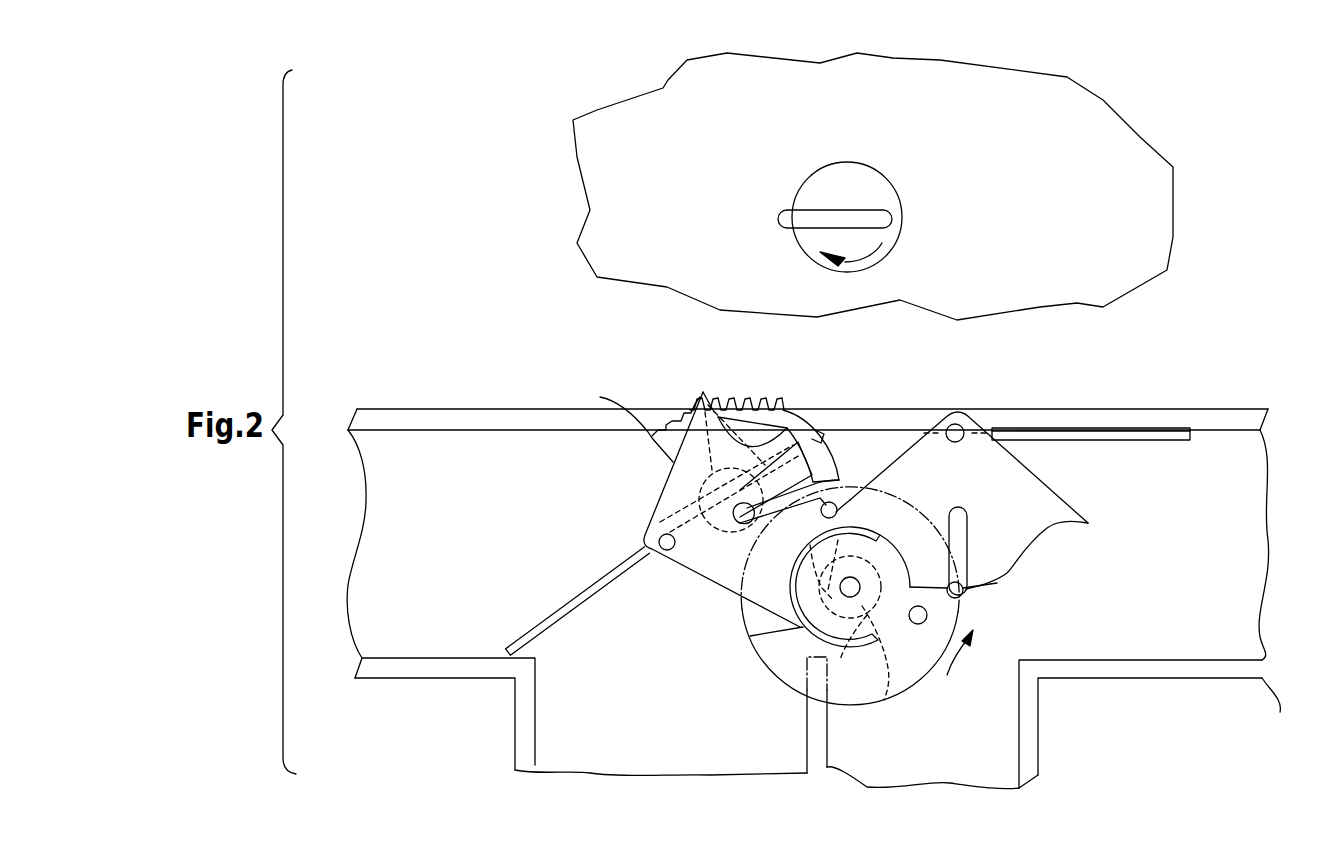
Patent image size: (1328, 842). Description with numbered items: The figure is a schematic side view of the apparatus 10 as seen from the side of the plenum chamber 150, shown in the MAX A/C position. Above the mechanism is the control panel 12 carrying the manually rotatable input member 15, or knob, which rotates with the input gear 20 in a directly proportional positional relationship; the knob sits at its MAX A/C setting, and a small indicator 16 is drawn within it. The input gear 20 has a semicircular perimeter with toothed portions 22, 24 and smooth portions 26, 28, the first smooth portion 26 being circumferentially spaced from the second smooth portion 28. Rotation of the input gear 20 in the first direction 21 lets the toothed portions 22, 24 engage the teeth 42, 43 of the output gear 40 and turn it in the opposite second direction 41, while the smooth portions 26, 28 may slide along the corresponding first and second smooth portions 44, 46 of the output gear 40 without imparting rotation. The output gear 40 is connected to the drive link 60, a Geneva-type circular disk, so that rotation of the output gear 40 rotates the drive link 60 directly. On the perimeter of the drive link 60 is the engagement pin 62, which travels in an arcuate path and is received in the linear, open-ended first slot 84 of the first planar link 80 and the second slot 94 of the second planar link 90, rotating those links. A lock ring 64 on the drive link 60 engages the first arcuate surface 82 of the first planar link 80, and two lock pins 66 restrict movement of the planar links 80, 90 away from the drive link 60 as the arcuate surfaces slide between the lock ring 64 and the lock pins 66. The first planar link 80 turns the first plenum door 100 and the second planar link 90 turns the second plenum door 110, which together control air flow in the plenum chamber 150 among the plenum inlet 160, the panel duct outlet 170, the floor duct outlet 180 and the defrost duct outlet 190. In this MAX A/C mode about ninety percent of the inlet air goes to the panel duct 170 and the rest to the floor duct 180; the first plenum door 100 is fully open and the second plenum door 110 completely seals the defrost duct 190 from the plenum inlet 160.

The apparatus 10 is at (1150, 485).
The control panel 12 is at (1188, 222).
The input member 15 is at (813, 230).
The knob rotation arrow 16 is at (862, 273).
The input gear 20 is at (803, 418).
The first direction 21 is at (720, 368).
The toothed portion 22 is at (746, 394).
The toothed portion 24 is at (667, 403).
The first smooth portion 26 is at (830, 450).
The second smooth portion 28 is at (672, 415).
The output gear 40 is at (750, 637).
The second direction 41 is at (960, 675).
The teeth 42 is at (896, 496).
The teeth 43 is at (895, 688).
The first smooth portion 44 is at (834, 615).
The second smooth portion 46 is at (885, 625).
The drive link 60 is at (888, 686).
The engagement pin 62 is at (964, 594).
The lock ring 64 is at (803, 630).
The lock pins 66 is at (835, 503).
The first planar link 80 is at (1037, 468).
The first arcuate surface 82 is at (1047, 532).
The first slot 84 is at (962, 535).
The second planar link 90 is at (688, 583).
The second slot 94 is at (746, 527).
The first plenum door 100 is at (1188, 436).
The second plenum door 110 is at (563, 614).
The plenum chamber 150 is at (457, 408).
The plenum inlet 160 is at (593, 753).
The panel duct outlet 170 is at (1236, 640).
The floor duct outlet 180 is at (993, 757).
The defrost duct outlet 190 is at (390, 603).